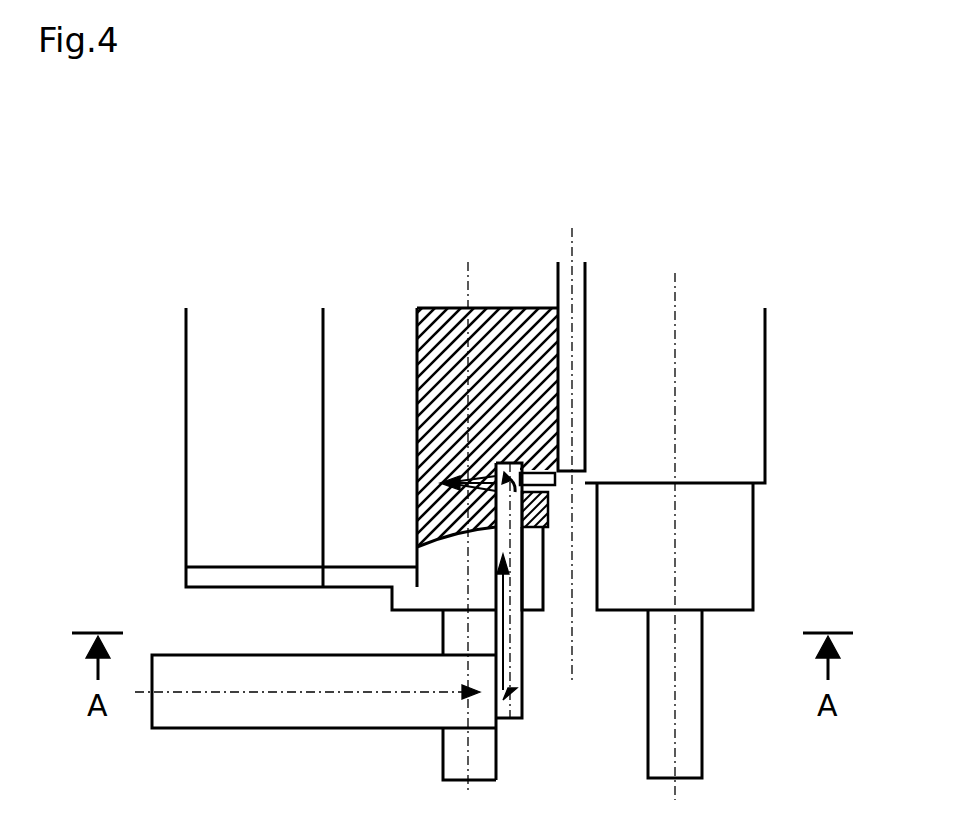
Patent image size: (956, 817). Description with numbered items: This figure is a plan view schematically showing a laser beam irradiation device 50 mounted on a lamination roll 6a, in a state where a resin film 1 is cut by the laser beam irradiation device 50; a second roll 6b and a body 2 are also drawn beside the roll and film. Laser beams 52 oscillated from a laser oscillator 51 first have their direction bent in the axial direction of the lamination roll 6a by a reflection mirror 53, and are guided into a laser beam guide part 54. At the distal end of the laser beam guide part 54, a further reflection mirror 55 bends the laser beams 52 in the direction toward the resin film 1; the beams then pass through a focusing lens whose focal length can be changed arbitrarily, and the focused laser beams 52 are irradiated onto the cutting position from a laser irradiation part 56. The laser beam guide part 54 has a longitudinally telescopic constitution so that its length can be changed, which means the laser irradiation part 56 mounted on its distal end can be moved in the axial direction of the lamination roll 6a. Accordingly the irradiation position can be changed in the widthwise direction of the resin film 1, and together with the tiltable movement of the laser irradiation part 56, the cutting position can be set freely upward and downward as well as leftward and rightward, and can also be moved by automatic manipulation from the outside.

The resin film 1 is at (445, 335).
The mold body 2 is at (230, 360).
The lamination roll 6a is at (508, 278).
The second wall member 6b is at (671, 262).
The laser beam irradiation device 50 is at (538, 690).
The laser oscillator 51 is at (267, 708).
The laser beams 52 is at (402, 695).
The reflection mirror 53 is at (512, 700).
The laser beam guide part 54 is at (523, 640).
The reflection mirror 55 is at (515, 490).
The laser irradiation part 56 is at (533, 433).